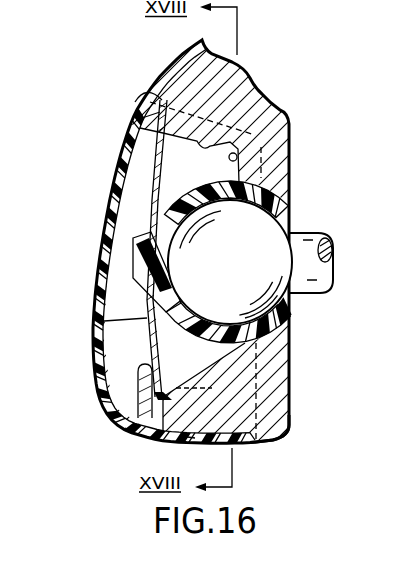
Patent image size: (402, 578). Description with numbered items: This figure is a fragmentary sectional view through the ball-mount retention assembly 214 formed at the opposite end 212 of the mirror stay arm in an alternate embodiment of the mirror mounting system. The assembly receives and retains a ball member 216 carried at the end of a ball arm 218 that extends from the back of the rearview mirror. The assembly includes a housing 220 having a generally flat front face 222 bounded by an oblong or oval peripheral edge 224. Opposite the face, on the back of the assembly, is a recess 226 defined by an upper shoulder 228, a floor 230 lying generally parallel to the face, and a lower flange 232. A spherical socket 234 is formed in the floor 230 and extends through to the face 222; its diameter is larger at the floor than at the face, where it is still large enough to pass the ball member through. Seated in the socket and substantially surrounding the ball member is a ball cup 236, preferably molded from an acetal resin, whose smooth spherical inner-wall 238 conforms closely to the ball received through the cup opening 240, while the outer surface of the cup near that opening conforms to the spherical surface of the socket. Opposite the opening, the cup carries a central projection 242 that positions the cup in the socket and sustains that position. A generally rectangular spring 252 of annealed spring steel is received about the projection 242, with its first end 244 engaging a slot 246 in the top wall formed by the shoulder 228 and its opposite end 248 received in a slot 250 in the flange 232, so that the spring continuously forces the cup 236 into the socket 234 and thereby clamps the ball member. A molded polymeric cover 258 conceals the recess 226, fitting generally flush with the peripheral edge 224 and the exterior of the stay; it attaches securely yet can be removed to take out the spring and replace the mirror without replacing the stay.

The opposite end of stay arm 212 is at (153, 72).
The ball-mount retention assembly 214 is at (110, 423).
The ball member 216 is at (262, 249).
The ball arm 218 is at (308, 233).
The housing 220 is at (283, 430).
The front face 222 is at (289, 363).
The peripheral edge 224 is at (265, 445).
The recess 226 is at (152, 153).
The upper shoulder 228 is at (197, 140).
The floor 230 is at (270, 128).
The lower flange 232 is at (190, 389).
The spherical socket 234 is at (290, 167).
The ball cup 236 is at (266, 345).
The spherical inner-wall 238 is at (168, 263).
The cup opening 240 is at (304, 201).
The central projection 242 is at (140, 270).
The first end of spring 244 is at (140, 116).
The slot in top wall 246 is at (152, 93).
The opposite end of spring 248 is at (122, 397).
The slot in flange 250 is at (128, 425).
The spring 252 is at (104, 321).
The cover 258 is at (187, 438).